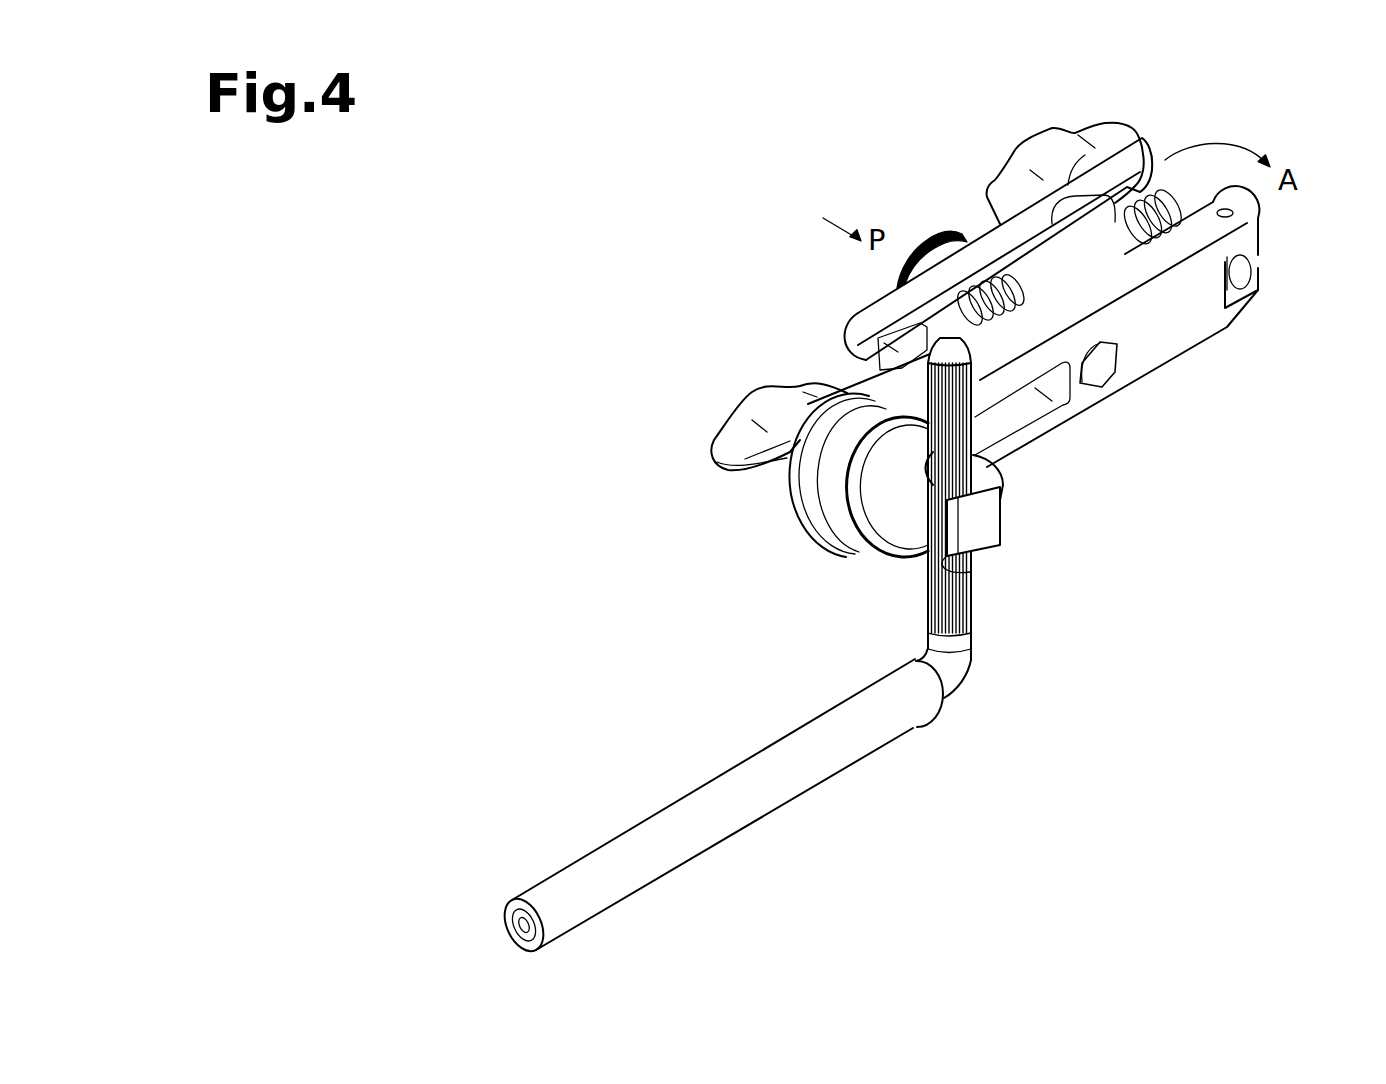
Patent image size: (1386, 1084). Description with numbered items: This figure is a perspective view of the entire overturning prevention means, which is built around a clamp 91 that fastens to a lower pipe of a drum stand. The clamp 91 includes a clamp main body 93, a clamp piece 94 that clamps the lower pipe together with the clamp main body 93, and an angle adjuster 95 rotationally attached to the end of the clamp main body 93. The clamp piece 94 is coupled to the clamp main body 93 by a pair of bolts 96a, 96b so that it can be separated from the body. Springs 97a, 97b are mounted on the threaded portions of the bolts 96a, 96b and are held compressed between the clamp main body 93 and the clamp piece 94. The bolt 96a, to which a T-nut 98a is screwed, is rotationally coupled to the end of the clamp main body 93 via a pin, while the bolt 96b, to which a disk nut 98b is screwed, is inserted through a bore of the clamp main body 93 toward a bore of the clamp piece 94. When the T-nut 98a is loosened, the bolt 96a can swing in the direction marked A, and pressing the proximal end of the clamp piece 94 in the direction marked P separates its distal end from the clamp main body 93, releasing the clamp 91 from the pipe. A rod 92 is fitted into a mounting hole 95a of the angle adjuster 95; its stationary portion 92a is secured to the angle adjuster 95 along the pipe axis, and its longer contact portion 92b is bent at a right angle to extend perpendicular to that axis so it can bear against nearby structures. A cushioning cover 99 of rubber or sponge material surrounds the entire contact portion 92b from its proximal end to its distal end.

The clamp 91 is at (1147, 149).
The rod 92 is at (973, 368).
The stationary portion 92a is at (971, 596).
The contact portion 92b is at (510, 931).
The clamp main body 93 is at (1187, 357).
The clamp piece 94 is at (850, 332).
The angle adjuster 95 is at (846, 540).
The mounting hole 95a is at (928, 478).
The bolt 96a is at (1250, 268).
The bolt 96b is at (1098, 385).
The spring 97a is at (1186, 192).
The spring 97b is at (1013, 302).
The T-nut 98a is at (1092, 126).
The disk nut 98b is at (898, 275).
The cover 99 is at (711, 776).